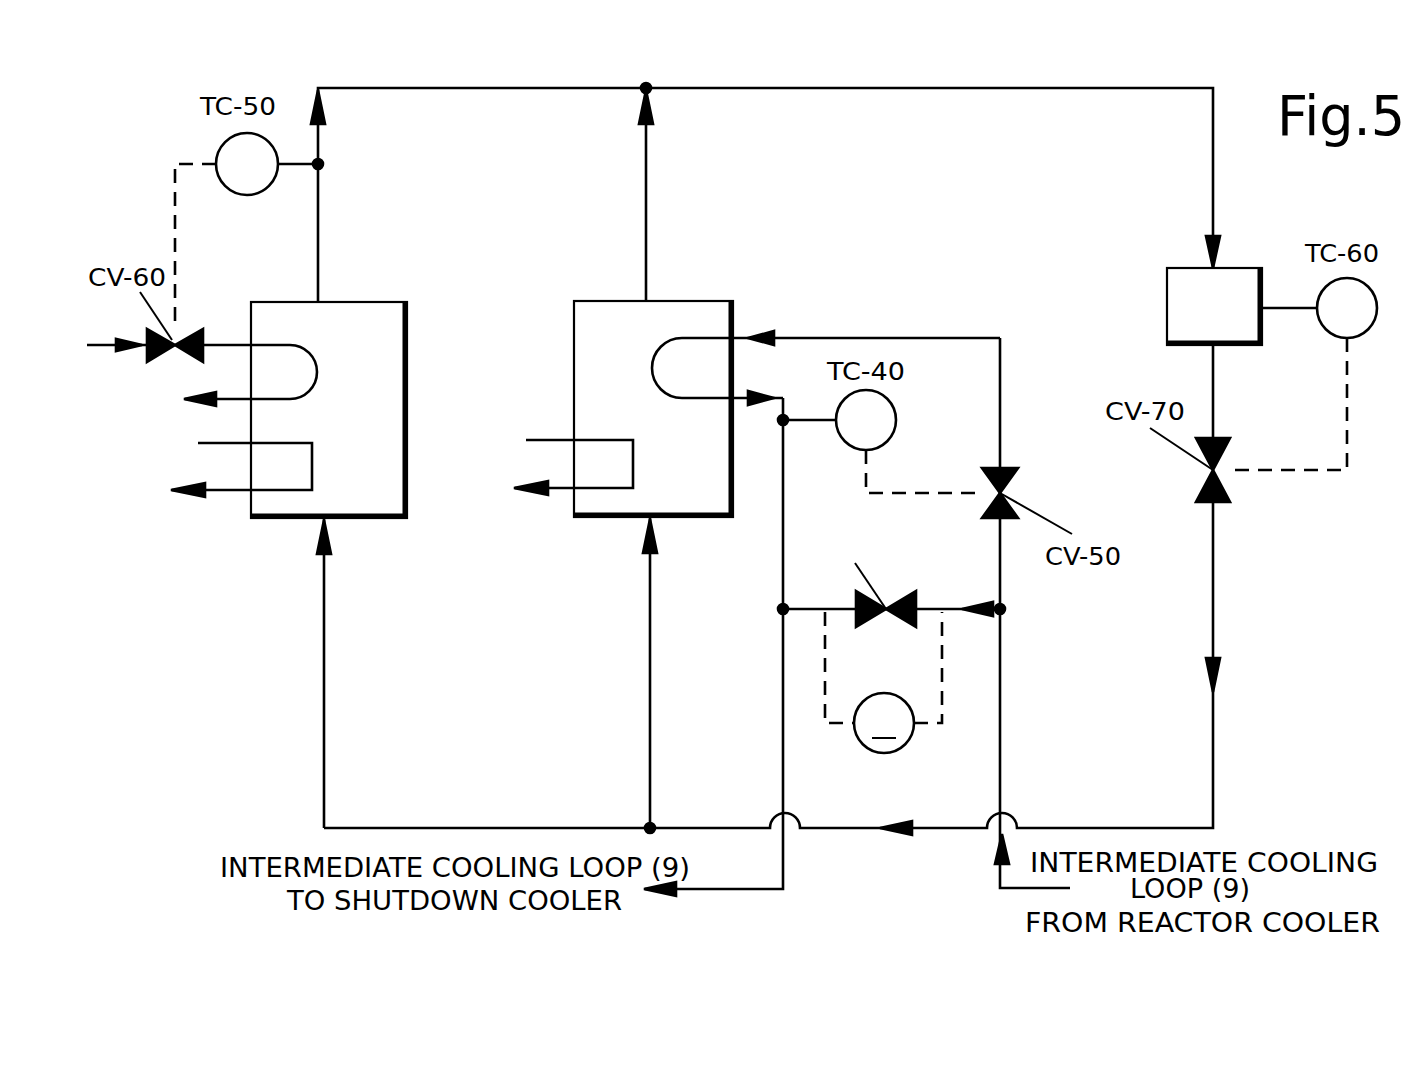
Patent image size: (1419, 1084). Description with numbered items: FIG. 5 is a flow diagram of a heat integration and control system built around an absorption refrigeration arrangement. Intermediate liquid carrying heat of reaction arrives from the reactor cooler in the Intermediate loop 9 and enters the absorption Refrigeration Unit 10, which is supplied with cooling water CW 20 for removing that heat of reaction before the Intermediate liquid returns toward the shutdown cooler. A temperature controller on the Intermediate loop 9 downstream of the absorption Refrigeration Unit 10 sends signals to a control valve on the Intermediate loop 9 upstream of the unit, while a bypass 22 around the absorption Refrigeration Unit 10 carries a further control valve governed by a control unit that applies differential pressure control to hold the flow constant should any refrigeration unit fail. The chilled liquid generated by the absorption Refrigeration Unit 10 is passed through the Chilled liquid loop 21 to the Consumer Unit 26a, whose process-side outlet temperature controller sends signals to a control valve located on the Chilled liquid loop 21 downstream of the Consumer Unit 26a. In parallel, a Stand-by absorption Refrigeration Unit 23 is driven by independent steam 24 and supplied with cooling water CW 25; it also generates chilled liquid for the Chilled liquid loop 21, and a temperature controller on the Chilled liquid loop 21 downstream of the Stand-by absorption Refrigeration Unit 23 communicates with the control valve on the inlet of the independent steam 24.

The Intermediate loop 9 is at (928, 338).
The absorption Refrigeration Unit 10 is at (630, 404).
The CW 20 is at (573, 467).
The Chilled liquid loop 21 is at (688, 826).
The bypass 22 is at (891, 645).
The Stand-by absorption Refrigeration Unit 23 is at (380, 416).
The independent steam 24 is at (250, 375).
The CW 25 is at (241, 470).
The Consumer Unit 26a is at (1214, 306).